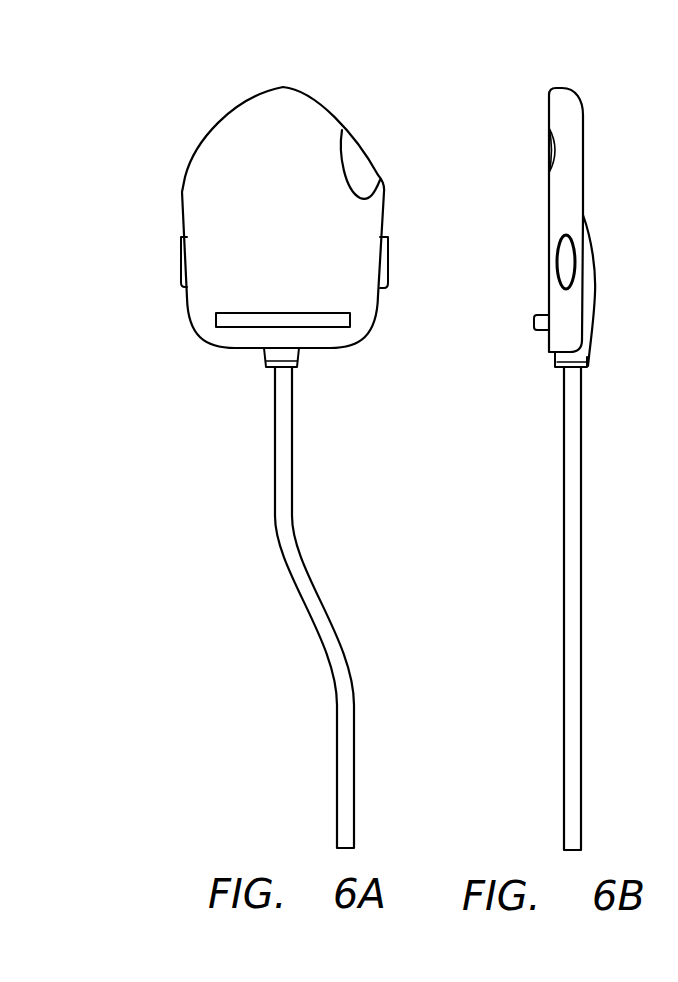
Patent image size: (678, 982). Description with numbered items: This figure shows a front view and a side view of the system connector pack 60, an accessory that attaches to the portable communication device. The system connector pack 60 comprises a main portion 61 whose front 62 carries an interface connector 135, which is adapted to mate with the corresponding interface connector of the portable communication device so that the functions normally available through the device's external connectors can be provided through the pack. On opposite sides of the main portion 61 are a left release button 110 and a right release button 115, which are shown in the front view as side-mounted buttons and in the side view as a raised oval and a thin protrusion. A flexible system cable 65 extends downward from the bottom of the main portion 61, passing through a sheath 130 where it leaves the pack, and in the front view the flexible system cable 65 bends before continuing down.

In FIG. 6A, the system connector pack 60 is at (229, 217).
In FIG. 6B, the system connector pack 60 is at (591, 67).
In FIG. 6A, the main portion 61 is at (278, 157).
In FIG. 6A, the front of the main portion 62 is at (231, 278).
In FIG. 6A, the flexible system cable 65 is at (322, 624).
In FIG. 6B, the flexible system cable 65 is at (570, 575).
In FIG. 6A, the left release button 110 is at (389, 274).
In FIG. 6B, the left release button 110 is at (565, 254).
In FIG. 6A, the right release button 115 is at (180, 267).
In FIG. 6B, the right release button 115 is at (552, 150).
In FIG. 6A, the sheath 130 is at (272, 364).
In FIG. 6B, the sheath 130 is at (567, 373).
In FIG. 6A, the interface connector 135 is at (237, 318).
In FIG. 6B, the interface connector 135 is at (537, 332).